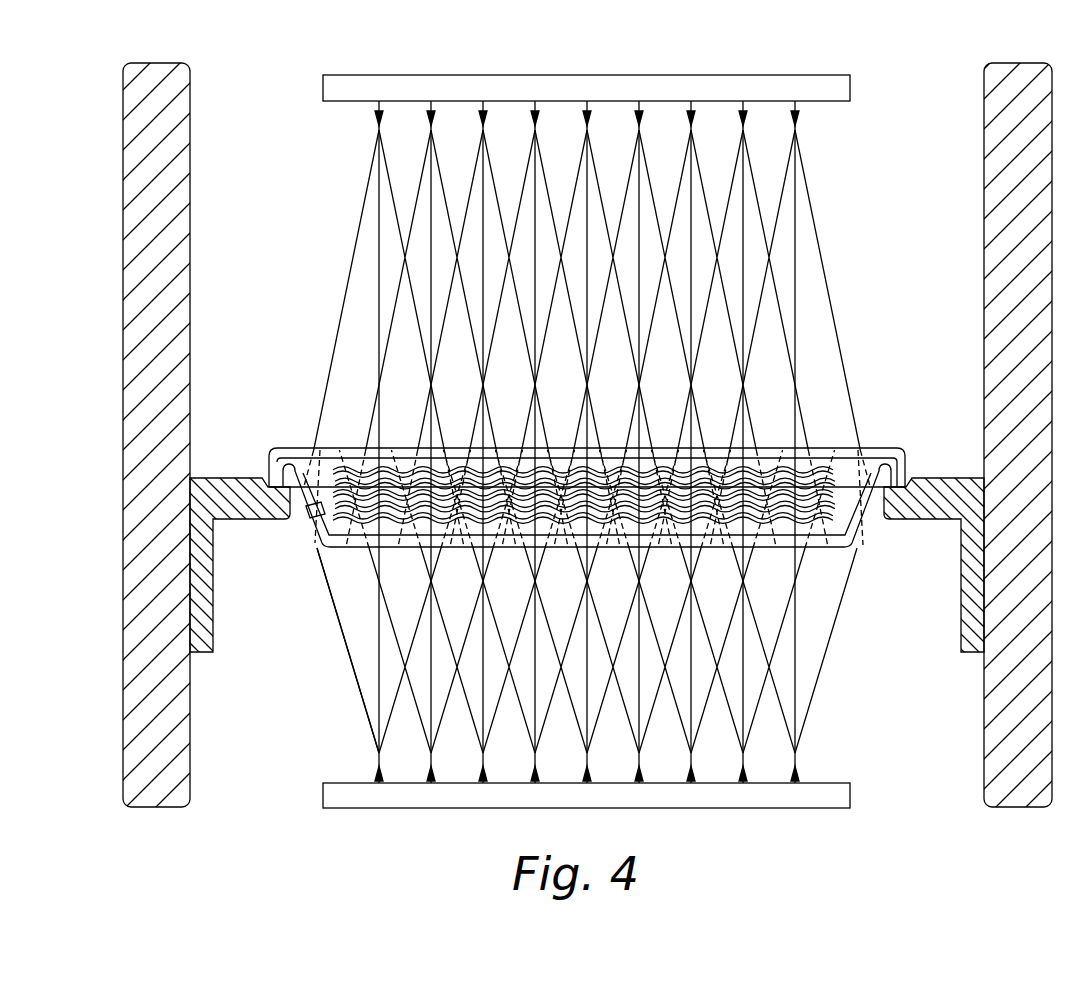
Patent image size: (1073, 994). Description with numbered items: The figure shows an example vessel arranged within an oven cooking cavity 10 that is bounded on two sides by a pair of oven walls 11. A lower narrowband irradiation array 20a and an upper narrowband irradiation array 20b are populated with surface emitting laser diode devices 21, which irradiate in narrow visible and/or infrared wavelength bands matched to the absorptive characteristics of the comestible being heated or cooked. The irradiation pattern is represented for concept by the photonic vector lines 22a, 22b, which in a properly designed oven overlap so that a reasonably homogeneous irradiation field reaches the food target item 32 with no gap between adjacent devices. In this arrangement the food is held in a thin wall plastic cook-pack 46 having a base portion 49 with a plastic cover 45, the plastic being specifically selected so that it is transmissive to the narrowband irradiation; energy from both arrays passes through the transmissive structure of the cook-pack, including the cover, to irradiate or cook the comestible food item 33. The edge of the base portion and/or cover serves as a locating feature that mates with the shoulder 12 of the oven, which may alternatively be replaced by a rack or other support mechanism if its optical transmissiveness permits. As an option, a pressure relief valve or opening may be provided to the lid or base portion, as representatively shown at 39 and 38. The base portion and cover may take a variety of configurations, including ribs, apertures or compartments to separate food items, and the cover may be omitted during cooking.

The oven cooking cavity 10 is at (283, 207).
The oven walls 11 is at (191, 735).
The shoulder 12 is at (232, 477).
The lower narrowband irradiation array 20a is at (771, 810).
The upper narrowband irradiation array 20b is at (816, 93).
The surface emitting laser diode devices 21 is at (530, 122).
The photonic vector lines 22a is at (785, 725).
The photonic vector lines 22b is at (795, 253).
The food target item 32 is at (771, 472).
The comestible food item 33 is at (773, 507).
The pressure relief valve or opening 38 is at (304, 514).
The pressure relief valve or opening 39 is at (316, 458).
The plastic cover 45 is at (868, 447).
The thin wall plastic cook-pack 46 is at (822, 552).
The base portion 49 is at (340, 575).